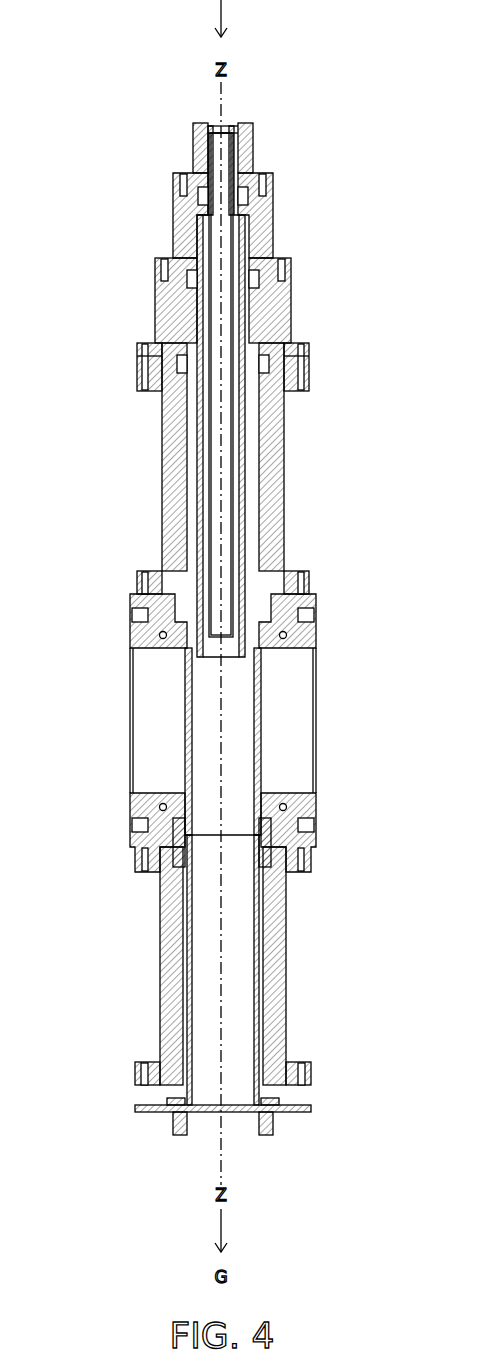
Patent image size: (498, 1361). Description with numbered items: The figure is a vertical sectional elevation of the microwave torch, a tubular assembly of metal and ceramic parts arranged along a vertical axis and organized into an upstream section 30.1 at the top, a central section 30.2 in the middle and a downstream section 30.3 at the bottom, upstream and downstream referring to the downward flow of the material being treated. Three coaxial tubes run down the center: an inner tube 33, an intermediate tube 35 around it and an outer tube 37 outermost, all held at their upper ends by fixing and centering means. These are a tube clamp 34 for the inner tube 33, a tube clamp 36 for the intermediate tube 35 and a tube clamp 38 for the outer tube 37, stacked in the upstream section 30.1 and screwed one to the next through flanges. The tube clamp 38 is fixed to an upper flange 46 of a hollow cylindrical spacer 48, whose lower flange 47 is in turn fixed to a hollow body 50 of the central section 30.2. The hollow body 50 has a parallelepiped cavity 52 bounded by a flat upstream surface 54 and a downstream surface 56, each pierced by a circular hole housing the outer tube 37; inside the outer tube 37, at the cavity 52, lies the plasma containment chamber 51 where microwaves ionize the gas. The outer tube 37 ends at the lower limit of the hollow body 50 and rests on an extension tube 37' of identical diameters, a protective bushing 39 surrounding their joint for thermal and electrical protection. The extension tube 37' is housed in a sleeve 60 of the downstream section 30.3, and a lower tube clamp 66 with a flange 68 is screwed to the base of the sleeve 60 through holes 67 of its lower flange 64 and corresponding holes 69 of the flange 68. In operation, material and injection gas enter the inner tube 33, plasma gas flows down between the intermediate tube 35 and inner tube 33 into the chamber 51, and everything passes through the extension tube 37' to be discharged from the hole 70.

The upstream section 30.1 is at (362, 120).
The central section 30.2 is at (362, 594).
The downstream section 30.3 is at (362, 840).
The inner tube 33 is at (238, 153).
The tube clamp 34 is at (197, 143).
The intermediate tube 35 is at (210, 660).
The tube clamp 36 is at (185, 227).
The outer tube 37 is at (279, 741).
The extension tube 37' is at (281, 970).
The tube clamp 38 is at (167, 312).
The protective bushing 39 is at (266, 850).
The upper flange 46 is at (138, 375).
The lower flange 47 is at (136, 583).
The hollow cylindrical spacer 48 is at (160, 470).
The hollow body 50 is at (110, 695).
The plasma containment chamber 51 is at (212, 750).
The cavity 52 is at (142, 750).
The upstream surface 54 is at (280, 662).
The downstream surface 56 is at (284, 781).
The sleeve 60 is at (136, 962).
The lower flange 64 is at (137, 1075).
The lower tube clamp 66 is at (170, 1124).
The holes 67 is at (143, 1062).
The flange 68 is at (278, 1124).
The holes 69 is at (300, 1112).
The hole 70 is at (188, 1125).